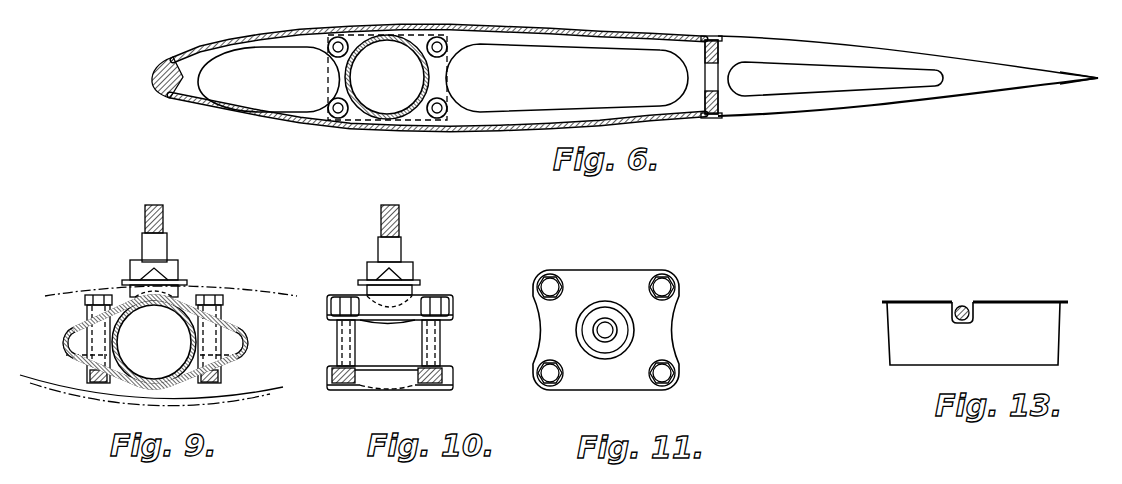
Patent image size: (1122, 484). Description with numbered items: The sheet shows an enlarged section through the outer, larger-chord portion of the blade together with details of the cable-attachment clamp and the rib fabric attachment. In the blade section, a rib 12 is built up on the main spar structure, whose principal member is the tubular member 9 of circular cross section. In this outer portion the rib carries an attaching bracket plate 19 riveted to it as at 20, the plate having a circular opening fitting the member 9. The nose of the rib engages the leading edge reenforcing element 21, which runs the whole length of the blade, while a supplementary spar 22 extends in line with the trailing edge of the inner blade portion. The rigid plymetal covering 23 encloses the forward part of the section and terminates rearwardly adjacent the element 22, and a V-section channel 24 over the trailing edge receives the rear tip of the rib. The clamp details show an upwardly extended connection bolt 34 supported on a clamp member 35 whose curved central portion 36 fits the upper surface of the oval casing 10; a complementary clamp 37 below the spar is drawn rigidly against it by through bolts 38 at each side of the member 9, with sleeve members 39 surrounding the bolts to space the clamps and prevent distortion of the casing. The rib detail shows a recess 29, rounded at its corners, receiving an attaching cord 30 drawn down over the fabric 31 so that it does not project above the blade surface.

In FIG. 6, the tubular member 9 is at (414, 50).
In FIG. 9, the tubular member 9 is at (186, 336).
In FIG. 9, the casing 10 is at (247, 342).
In FIG. 6, the ribs 12 is at (516, 34).
In FIG. 13, the ribs 12 is at (898, 333).
In FIG. 6, the attaching bracket plates 19 is at (448, 78).
In FIG. 6, the rivets 20 is at (333, 104).
In FIG. 6, the leading edge reenforcing element 21 is at (162, 94).
In FIG. 6, the supplementary spar 22 is at (721, 52).
In FIG. 6, the rigid covering 23 is at (302, 28).
In FIG. 6, the trailing edge strengthening element 24 is at (1058, 87).
In FIG. 13, the recessed portions 29 is at (972, 321).
In FIG. 13, the attaching cord 30 is at (969, 306).
In FIG. 13, the fabric 31 is at (935, 300).
In FIG. 9, the connection bolt 34 is at (166, 250).
In FIG. 10, the connection bolt 34 is at (402, 256).
In FIG. 11, the connection bolt 34 is at (612, 330).
In FIG. 9, the clamp member 35 is at (162, 337).
In FIG. 10, the clamp member 35 is at (417, 297).
In FIG. 11, the clamp member 35 is at (557, 325).
In FIG. 9, the curved central portion 36 is at (163, 298).
In FIG. 9, the complementary clamp 37 is at (181, 383).
In FIG. 10, the complementary clamp 37 is at (373, 383).
In FIG. 9, the through bolts 38 is at (63, 357).
In FIG. 10, the through bolts 38 is at (443, 338).
In FIG. 11, the through bolts 38 is at (654, 282).
In FIG. 9, the sleeve members 39 is at (154, 330).
In FIG. 10, the sleeve members 39 is at (337, 346).